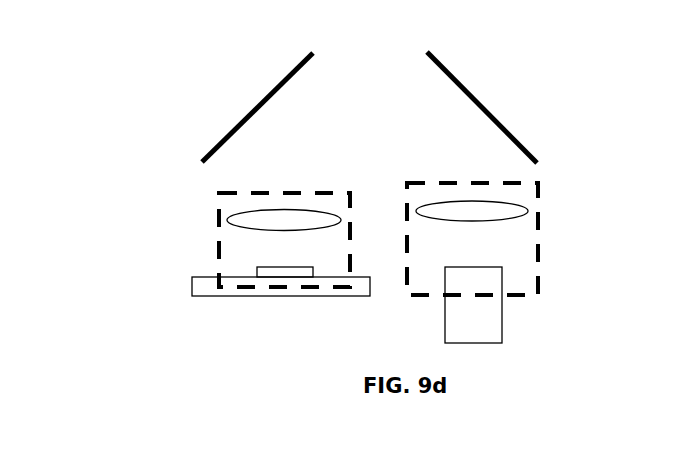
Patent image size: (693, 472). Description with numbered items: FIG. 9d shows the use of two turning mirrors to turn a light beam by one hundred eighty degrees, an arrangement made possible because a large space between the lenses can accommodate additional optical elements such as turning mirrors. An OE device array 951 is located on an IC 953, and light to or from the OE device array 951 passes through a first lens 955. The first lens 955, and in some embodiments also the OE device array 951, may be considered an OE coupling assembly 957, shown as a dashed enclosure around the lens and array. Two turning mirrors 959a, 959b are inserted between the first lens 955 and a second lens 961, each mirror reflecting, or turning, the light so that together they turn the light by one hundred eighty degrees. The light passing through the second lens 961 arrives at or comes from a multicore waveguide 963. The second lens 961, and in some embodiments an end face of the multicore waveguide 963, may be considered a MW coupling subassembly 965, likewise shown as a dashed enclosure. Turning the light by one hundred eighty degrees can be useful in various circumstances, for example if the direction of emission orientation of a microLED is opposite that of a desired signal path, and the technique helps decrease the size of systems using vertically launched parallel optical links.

The OE device array 951 is at (257, 268).
The IC 953 is at (192, 285).
The first lens 955 is at (270, 210).
The OE coupling assembly 957 is at (219, 230).
The turning mirror 959a is at (287, 107).
The turning mirror 959b is at (468, 90).
The second lens 961 is at (497, 202).
The multicore waveguide 963 is at (502, 313).
The MW coupling subassembly 965 is at (538, 193).